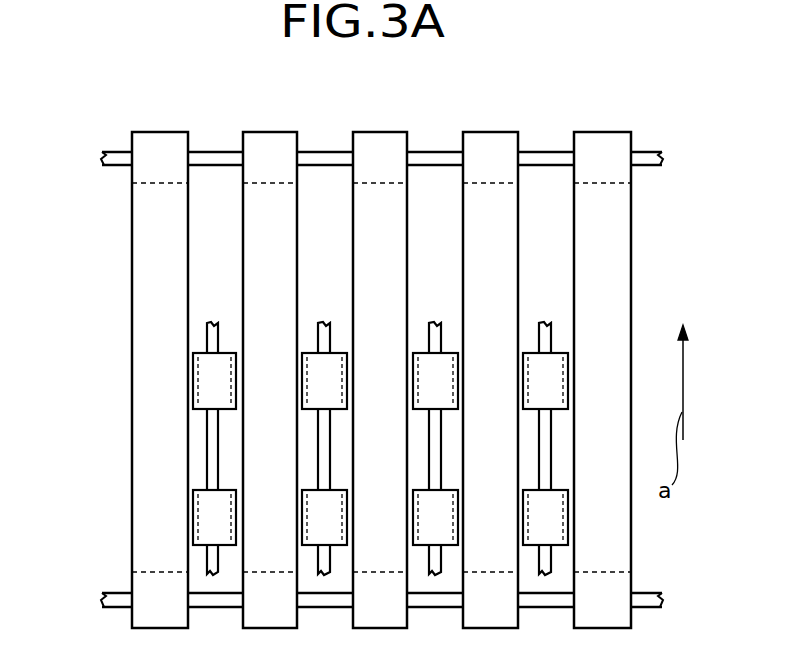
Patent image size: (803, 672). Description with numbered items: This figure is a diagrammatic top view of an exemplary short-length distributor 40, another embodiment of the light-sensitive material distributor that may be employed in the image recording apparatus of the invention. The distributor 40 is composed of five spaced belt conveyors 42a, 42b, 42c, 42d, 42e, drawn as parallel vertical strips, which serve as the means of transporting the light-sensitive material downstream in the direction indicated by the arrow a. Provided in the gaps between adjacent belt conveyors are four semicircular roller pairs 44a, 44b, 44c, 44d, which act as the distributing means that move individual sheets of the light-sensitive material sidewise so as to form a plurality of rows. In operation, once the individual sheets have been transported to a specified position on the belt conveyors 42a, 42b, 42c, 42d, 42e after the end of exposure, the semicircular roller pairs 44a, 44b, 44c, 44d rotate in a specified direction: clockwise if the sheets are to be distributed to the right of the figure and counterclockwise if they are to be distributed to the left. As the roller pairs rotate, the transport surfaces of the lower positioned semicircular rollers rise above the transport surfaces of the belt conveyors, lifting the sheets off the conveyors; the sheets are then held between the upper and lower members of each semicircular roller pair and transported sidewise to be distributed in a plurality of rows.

The short-length distributor 40 is at (650, 131).
The belt conveyor 42a is at (150, 228).
The belt conveyor 42b is at (275, 232).
The belt conveyor 42c is at (390, 232).
The belt conveyor 42d is at (494, 232).
The belt conveyor 42e is at (608, 272).
The semicircular roller pair 44a is at (195, 573).
The semicircular roller pair 44b is at (307, 573).
The semicircular roller pair 44c is at (420, 573).
The semicircular roller pair 44d is at (531, 573).